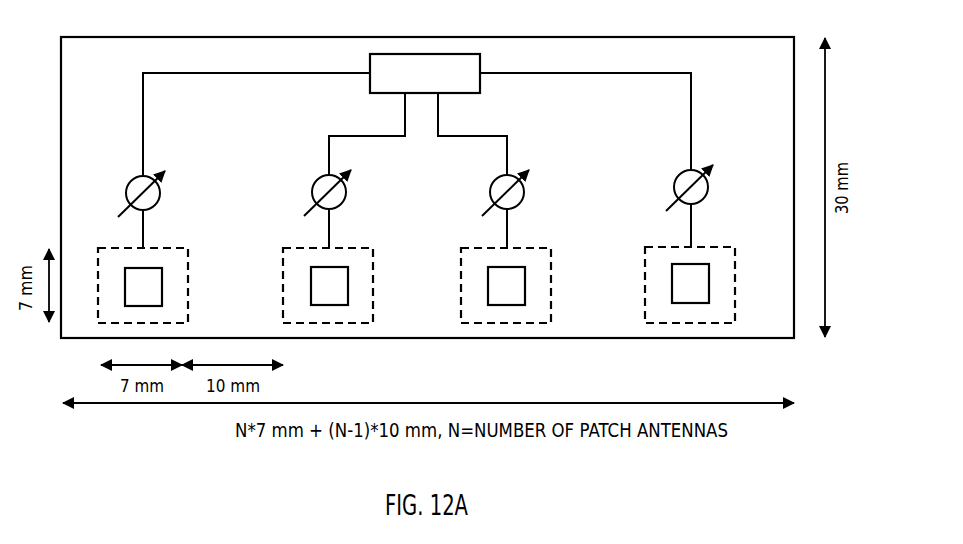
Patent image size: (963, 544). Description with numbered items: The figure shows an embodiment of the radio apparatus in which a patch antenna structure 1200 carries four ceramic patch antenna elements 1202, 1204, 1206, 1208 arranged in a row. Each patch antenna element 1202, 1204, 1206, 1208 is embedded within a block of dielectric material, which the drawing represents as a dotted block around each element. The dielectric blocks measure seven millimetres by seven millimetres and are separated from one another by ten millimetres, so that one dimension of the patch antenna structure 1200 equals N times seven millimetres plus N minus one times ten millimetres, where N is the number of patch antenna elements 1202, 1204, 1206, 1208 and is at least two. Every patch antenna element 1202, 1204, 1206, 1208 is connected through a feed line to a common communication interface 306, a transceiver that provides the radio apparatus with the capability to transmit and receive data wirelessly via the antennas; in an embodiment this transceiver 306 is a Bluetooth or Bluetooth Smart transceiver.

The patch antenna structure 1200 is at (108, 70).
The communication interface (TRX) 306 is at (425, 73).
The ceramic patch antenna element 1202 is at (157, 261).
The ceramic patch antenna element 1204 is at (347, 261).
The ceramic patch antenna element 1206 is at (525, 261).
The ceramic patch antenna element 1208 is at (707, 260).